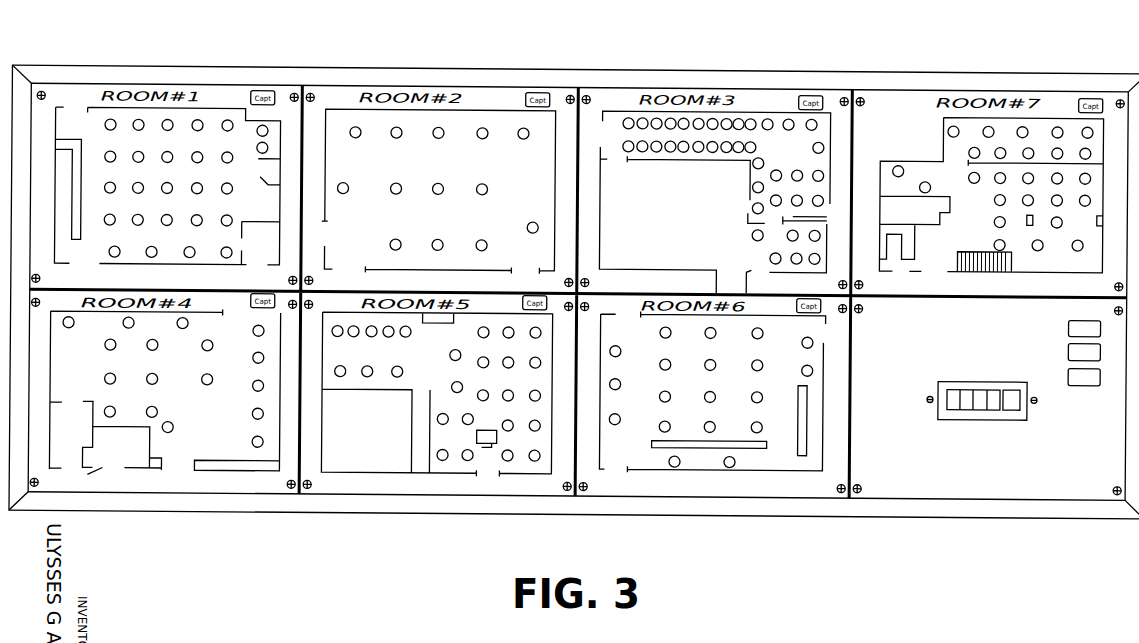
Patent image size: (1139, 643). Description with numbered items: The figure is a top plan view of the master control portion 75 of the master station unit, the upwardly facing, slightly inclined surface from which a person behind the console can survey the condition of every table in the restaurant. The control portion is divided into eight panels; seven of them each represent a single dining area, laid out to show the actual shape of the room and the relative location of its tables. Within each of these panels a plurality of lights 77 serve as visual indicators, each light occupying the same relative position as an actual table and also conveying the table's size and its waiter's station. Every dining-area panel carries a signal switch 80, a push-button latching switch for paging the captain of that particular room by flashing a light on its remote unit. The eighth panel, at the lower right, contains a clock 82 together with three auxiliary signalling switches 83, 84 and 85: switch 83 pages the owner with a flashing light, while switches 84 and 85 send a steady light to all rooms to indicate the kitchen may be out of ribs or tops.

The master control portion 75 is at (597, 70).
The lights 77 is at (230, 163).
The signal switch 80 is at (262, 88).
The clock 82 is at (959, 424).
The auxiliary signalling switch 83 is at (1096, 333).
The auxiliary signalling switch 84 is at (1062, 351).
The auxiliary signalling switch 85 is at (1062, 377).